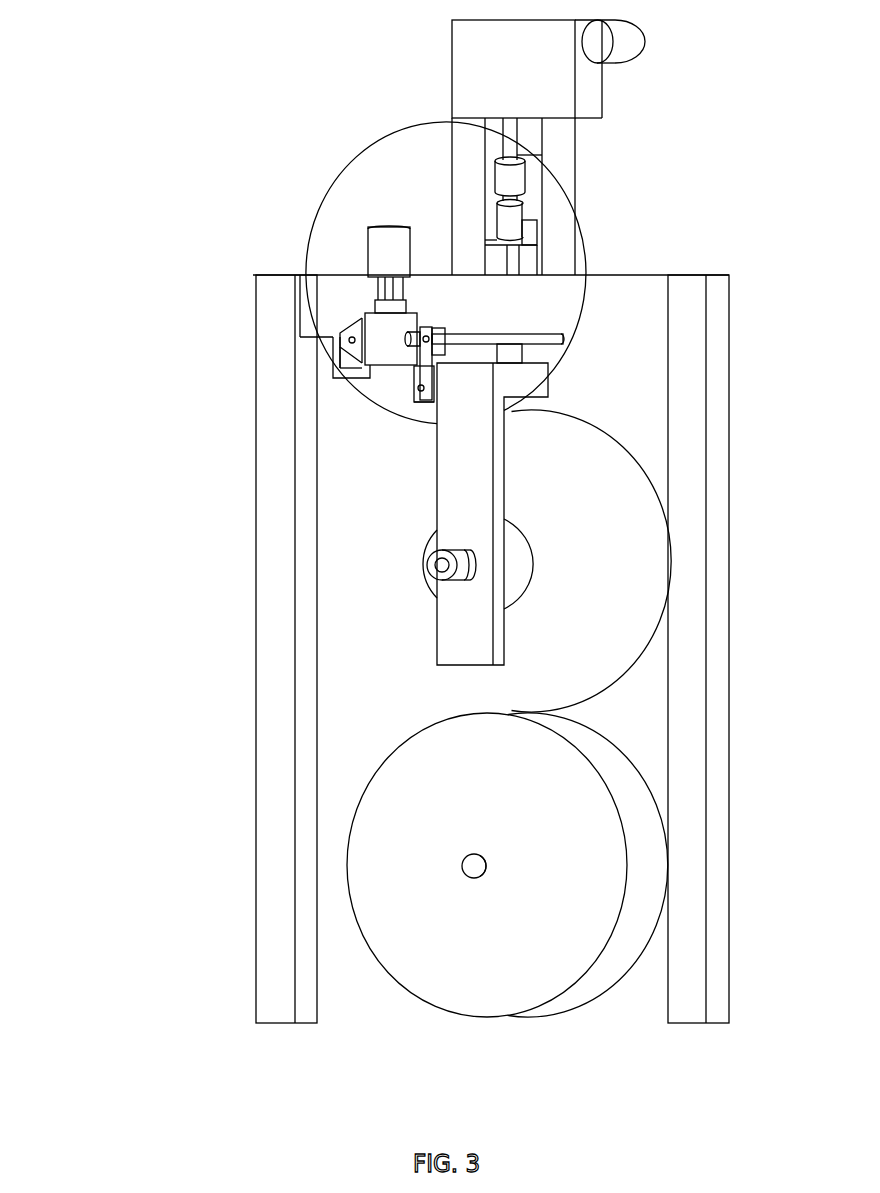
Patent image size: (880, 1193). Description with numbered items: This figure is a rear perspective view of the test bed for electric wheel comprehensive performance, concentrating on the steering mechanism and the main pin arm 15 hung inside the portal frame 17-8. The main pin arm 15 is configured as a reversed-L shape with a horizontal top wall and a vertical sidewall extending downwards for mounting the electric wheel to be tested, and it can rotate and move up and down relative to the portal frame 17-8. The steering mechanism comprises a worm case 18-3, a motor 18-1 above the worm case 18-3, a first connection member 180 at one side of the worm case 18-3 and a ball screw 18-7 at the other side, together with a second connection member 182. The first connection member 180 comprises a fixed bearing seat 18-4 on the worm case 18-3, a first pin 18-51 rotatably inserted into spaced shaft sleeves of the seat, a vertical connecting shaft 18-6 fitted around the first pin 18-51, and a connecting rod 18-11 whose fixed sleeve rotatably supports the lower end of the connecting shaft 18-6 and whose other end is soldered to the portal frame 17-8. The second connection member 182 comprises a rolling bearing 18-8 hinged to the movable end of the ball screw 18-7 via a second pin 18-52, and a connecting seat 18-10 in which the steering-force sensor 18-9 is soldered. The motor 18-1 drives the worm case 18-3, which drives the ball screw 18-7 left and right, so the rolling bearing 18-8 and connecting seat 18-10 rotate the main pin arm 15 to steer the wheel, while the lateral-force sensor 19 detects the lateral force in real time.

The motor 18-1 is at (385, 227).
The worm case 18-3 is at (378, 323).
The fixed bearing seat 18-4 is at (353, 330).
The first pin 18-51 is at (349, 341).
The vertical connecting shaft 18-6 is at (336, 372).
The connecting rod 18-11 is at (360, 357).
The second pin 18-52 is at (418, 350).
The rolling bearing 18-8 is at (415, 372).
The connecting seat 18-10 is at (418, 402).
The ball screw 18-7 is at (418, 357).
The steering-force sensor 18-9 is at (500, 337).
The first connection member 180 is at (200, 359).
The second connection member 182 is at (237, 492).
The main pin arm 15 is at (505, 383).
The lateral-force sensor 19 is at (463, 562).
The portal frame 17-8 is at (722, 548).